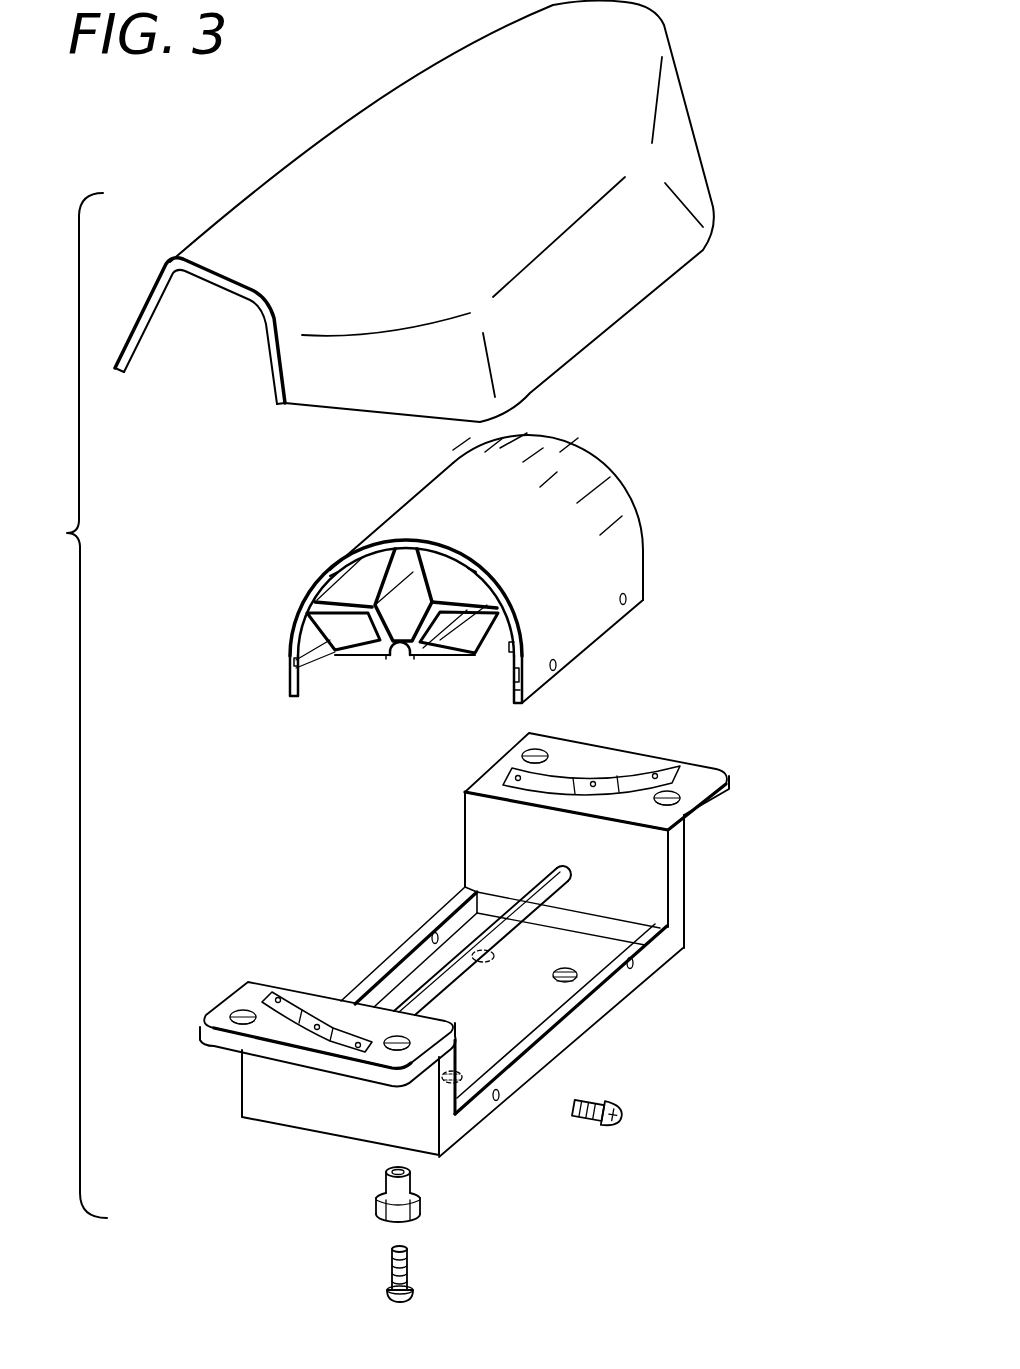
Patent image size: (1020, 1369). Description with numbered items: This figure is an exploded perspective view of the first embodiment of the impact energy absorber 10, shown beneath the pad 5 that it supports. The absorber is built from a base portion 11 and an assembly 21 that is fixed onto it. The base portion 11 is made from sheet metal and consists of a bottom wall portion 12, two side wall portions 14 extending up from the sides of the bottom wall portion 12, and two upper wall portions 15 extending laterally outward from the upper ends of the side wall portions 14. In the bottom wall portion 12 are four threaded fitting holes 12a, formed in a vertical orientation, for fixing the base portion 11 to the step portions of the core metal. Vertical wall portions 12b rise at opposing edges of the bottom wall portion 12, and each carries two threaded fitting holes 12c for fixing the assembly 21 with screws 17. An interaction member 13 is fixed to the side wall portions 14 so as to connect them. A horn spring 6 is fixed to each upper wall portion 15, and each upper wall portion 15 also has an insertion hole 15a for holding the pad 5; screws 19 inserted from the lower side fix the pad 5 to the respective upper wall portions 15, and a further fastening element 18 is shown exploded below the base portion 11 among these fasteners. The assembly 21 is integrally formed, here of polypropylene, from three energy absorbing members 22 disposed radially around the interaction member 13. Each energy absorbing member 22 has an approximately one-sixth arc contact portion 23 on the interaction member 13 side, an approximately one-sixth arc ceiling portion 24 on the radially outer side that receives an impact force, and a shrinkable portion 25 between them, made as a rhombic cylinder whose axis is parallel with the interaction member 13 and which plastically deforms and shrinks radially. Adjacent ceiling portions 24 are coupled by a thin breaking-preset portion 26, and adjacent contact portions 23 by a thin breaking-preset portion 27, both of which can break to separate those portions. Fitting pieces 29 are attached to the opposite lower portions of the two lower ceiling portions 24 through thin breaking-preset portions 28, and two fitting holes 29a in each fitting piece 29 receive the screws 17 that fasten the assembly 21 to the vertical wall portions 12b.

The pad 5 is at (733, 83).
The impact energy absorber 10 is at (489, 785).
The base portion 11 is at (485, 932).
The bottom wall portion 12 is at (545, 1016).
The fitting holes 12a is at (570, 970).
The vertical wall portions 12b is at (390, 960).
The fitting holes 12c is at (435, 935).
The interaction member 13 is at (570, 888).
The side wall portions 14 is at (655, 859).
The upper wall portions 15 is at (716, 769).
The insertion hole 15a is at (540, 752).
The horn spring 6 is at (636, 773).
The screws 17 is at (645, 1088).
The nut 18 is at (422, 1207).
The screws 19 is at (438, 1270).
The assembly 21 is at (475, 562).
The energy absorbing members 22 is at (277, 593).
The contact portion 23 is at (407, 652).
The ceiling portion 24 is at (385, 560).
The shrinkable portion 25 is at (420, 560).
The breaking-preset portion 26 is at (333, 577).
The breaking-preset portion 27 is at (395, 655).
The breaking-preset portions 28 is at (290, 665).
The fitting pieces 29 is at (512, 695).
The fitting holes 29a is at (627, 597).